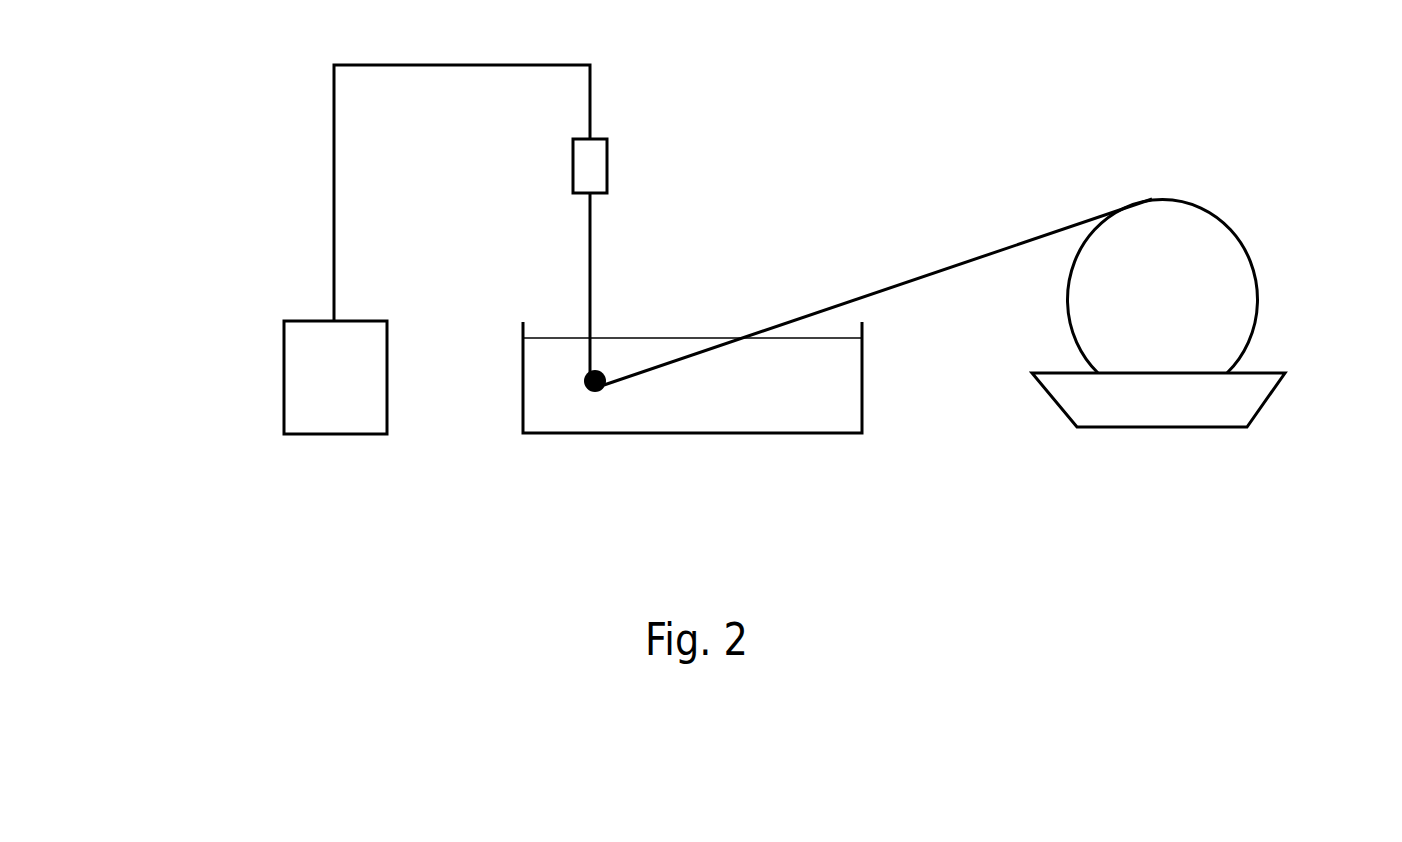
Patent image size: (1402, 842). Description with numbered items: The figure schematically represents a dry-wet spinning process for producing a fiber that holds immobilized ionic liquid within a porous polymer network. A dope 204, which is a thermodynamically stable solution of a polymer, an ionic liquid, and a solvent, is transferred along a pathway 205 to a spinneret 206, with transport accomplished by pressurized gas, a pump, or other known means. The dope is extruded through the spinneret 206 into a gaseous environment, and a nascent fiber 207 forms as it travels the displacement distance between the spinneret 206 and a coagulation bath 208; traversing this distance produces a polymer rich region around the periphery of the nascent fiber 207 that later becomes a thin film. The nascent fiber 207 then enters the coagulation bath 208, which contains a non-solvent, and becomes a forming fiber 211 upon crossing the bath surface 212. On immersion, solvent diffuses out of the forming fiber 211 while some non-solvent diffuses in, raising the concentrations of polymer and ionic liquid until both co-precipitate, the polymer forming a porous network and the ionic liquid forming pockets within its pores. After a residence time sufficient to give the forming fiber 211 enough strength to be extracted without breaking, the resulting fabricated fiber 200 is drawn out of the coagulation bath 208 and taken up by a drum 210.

The fabricated fiber 200 is at (978, 250).
The dope 204 is at (330, 355).
The pathway 205 is at (332, 168).
The spinneret 206 is at (607, 165).
The nascent fiber 207 is at (587, 253).
The coagulation bath 208 is at (688, 407).
The drum 210 is at (1198, 288).
The forming fiber 211 is at (587, 356).
The bath surface 212 is at (640, 335).